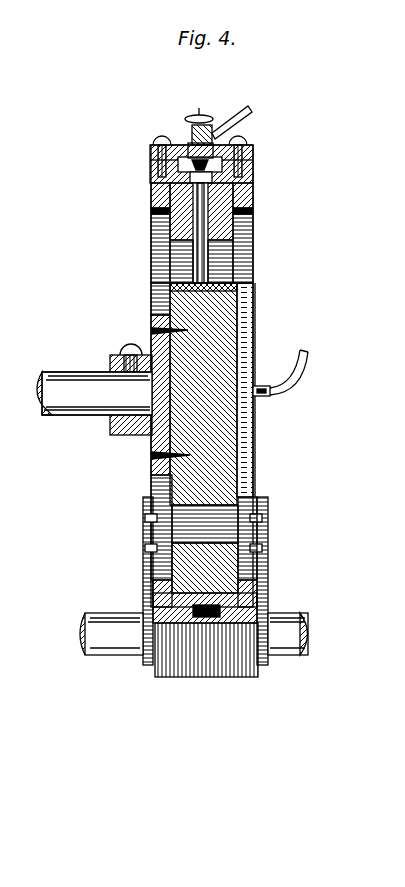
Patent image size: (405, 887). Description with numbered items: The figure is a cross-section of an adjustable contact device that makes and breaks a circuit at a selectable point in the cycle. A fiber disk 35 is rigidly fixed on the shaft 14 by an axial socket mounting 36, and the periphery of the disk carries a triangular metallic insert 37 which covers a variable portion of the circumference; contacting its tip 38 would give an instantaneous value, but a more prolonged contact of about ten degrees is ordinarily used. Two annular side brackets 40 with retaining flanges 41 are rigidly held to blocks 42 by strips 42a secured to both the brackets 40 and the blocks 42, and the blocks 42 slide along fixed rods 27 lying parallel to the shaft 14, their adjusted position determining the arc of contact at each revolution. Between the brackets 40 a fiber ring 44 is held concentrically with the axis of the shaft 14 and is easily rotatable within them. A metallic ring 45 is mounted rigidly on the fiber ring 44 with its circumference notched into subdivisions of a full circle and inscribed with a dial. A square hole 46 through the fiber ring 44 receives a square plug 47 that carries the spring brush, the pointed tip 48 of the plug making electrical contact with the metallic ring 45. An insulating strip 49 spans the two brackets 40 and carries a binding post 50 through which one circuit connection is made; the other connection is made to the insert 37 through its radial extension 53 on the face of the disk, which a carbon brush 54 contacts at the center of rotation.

The shaft 14 is at (65, 382).
The fixed rods 27 is at (290, 611).
The fiber disk 35 is at (182, 303).
The axial socket mounting 36 is at (115, 355).
The metallic insert 37 is at (253, 285).
The tip 38 is at (167, 286).
The annular side brackets 40 is at (200, 222).
The retaining flanges 41 is at (162, 187).
The blocks 42 is at (243, 665).
The strips 42a is at (150, 562).
The fiber ring 44 is at (253, 219).
The metallic ring 45 is at (252, 173).
The square hole 46 is at (151, 241).
The square plug 47 is at (253, 242).
The tip 48 is at (151, 218).
The insulating strip 49 is at (162, 136).
The binding post 50 is at (204, 113).
The radial extension 53 is at (243, 336).
The carbon brush 54 is at (260, 387).